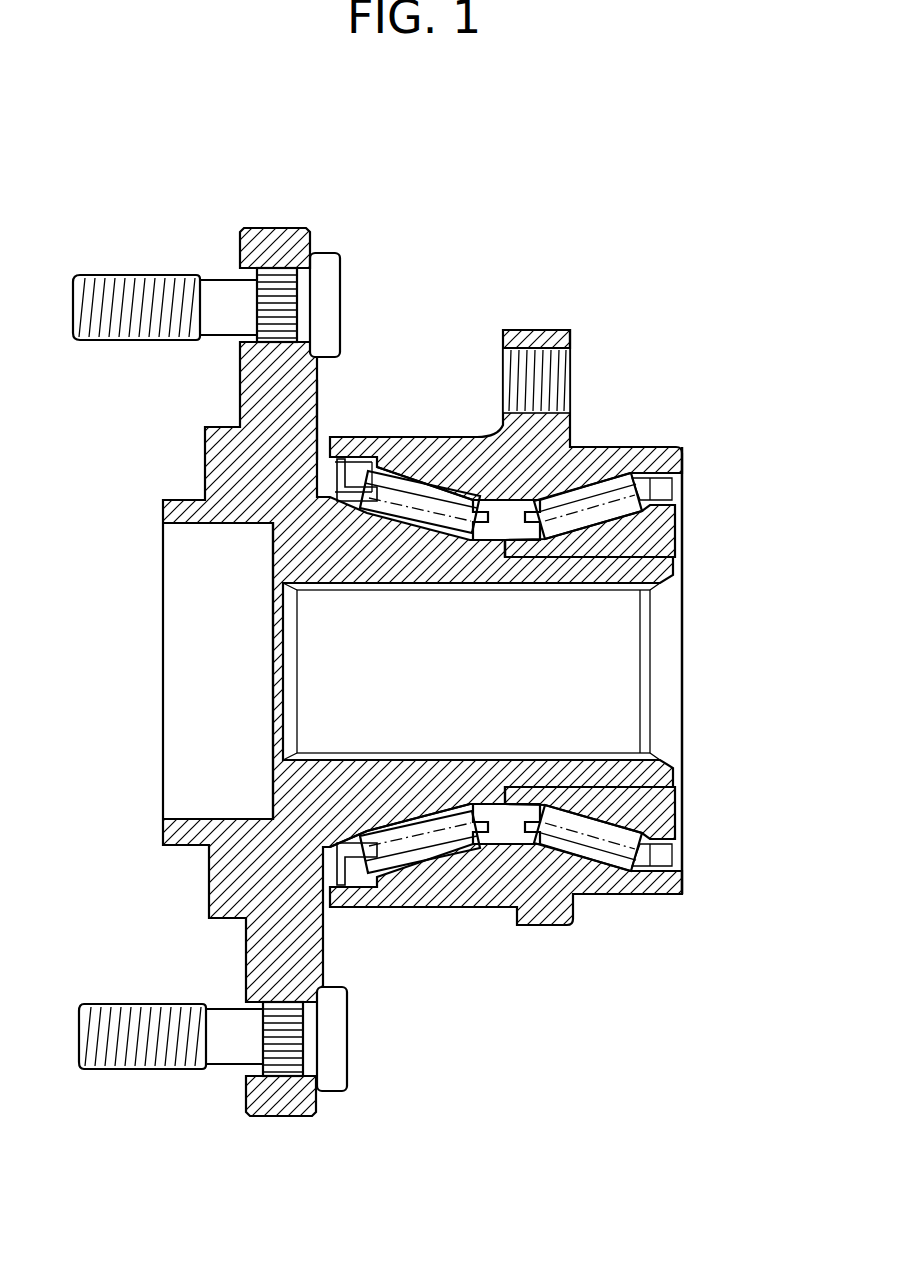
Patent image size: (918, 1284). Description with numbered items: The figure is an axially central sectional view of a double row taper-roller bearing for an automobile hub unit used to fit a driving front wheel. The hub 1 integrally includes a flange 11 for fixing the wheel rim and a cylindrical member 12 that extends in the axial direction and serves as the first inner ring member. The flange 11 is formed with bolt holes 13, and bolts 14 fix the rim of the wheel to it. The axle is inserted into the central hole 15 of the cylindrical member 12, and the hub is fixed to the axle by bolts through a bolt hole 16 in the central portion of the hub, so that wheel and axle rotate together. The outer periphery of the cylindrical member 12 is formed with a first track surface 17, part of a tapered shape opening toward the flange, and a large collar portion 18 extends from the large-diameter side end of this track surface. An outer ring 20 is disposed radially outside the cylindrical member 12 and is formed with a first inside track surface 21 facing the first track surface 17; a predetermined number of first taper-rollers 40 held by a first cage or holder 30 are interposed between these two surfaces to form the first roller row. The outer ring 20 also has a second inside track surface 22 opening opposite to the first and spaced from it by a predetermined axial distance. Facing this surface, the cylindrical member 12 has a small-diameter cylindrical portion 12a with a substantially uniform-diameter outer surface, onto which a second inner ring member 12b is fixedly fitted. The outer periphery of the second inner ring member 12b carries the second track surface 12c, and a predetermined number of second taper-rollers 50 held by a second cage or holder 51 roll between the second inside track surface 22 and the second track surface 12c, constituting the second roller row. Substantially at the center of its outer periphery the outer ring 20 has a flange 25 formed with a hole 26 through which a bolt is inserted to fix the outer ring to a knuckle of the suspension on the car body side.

The hub 1 is at (320, 420).
The flange 11 is at (293, 363).
The cylindrical member 12 is at (433, 790).
The small-diameter cylindrical portion 12a is at (660, 572).
The second inner ring member 12b is at (627, 533).
The second track surface 12c is at (688, 883).
The bolt holes 13 is at (275, 283).
The bolts 14 is at (220, 297).
The central hole 15 is at (590, 623).
The bolt hole 16 is at (200, 813).
The first track surface 17 is at (470, 797).
The large collar portion 18 is at (343, 500).
The outer ring 20 is at (555, 432).
The first inside track surface 21 is at (443, 870).
The second inside track surface 22 is at (630, 478).
The flange 25 is at (570, 340).
The hole 26 is at (545, 358).
The first cage or holder 30 is at (370, 866).
The first taper-rollers 40 is at (410, 522).
The second taper-rollers 50 is at (605, 830).
The second cage or holder 51 is at (572, 840).